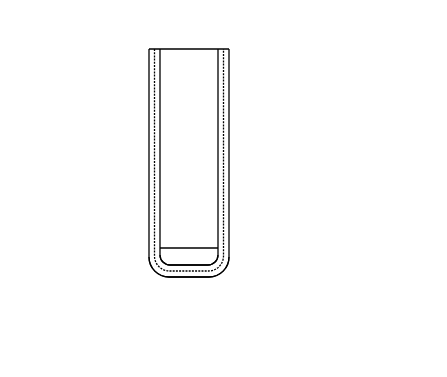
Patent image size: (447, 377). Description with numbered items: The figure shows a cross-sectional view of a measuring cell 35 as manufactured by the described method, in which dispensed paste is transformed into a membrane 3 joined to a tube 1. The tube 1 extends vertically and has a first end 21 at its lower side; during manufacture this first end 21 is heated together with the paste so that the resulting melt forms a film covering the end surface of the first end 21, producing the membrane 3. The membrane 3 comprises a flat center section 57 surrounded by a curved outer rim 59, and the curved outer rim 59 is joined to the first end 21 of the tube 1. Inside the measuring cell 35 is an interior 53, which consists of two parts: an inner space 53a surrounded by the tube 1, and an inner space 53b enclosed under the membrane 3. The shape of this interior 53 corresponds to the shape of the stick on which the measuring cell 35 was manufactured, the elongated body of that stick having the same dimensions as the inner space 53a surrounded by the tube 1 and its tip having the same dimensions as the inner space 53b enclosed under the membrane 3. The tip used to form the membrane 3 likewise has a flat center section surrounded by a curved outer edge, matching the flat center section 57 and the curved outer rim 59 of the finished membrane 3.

The measuring cell 35 is at (114, 74).
The tube 1 is at (228, 158).
The first end 21 is at (227, 233).
The interior 53 is at (65, 138).
The inner space 53a is at (181, 220).
The inner space 53b is at (190, 258).
The flat center section 57 is at (186, 267).
The curved outer rim 59 is at (223, 268).
The membrane 3 is at (216, 307).